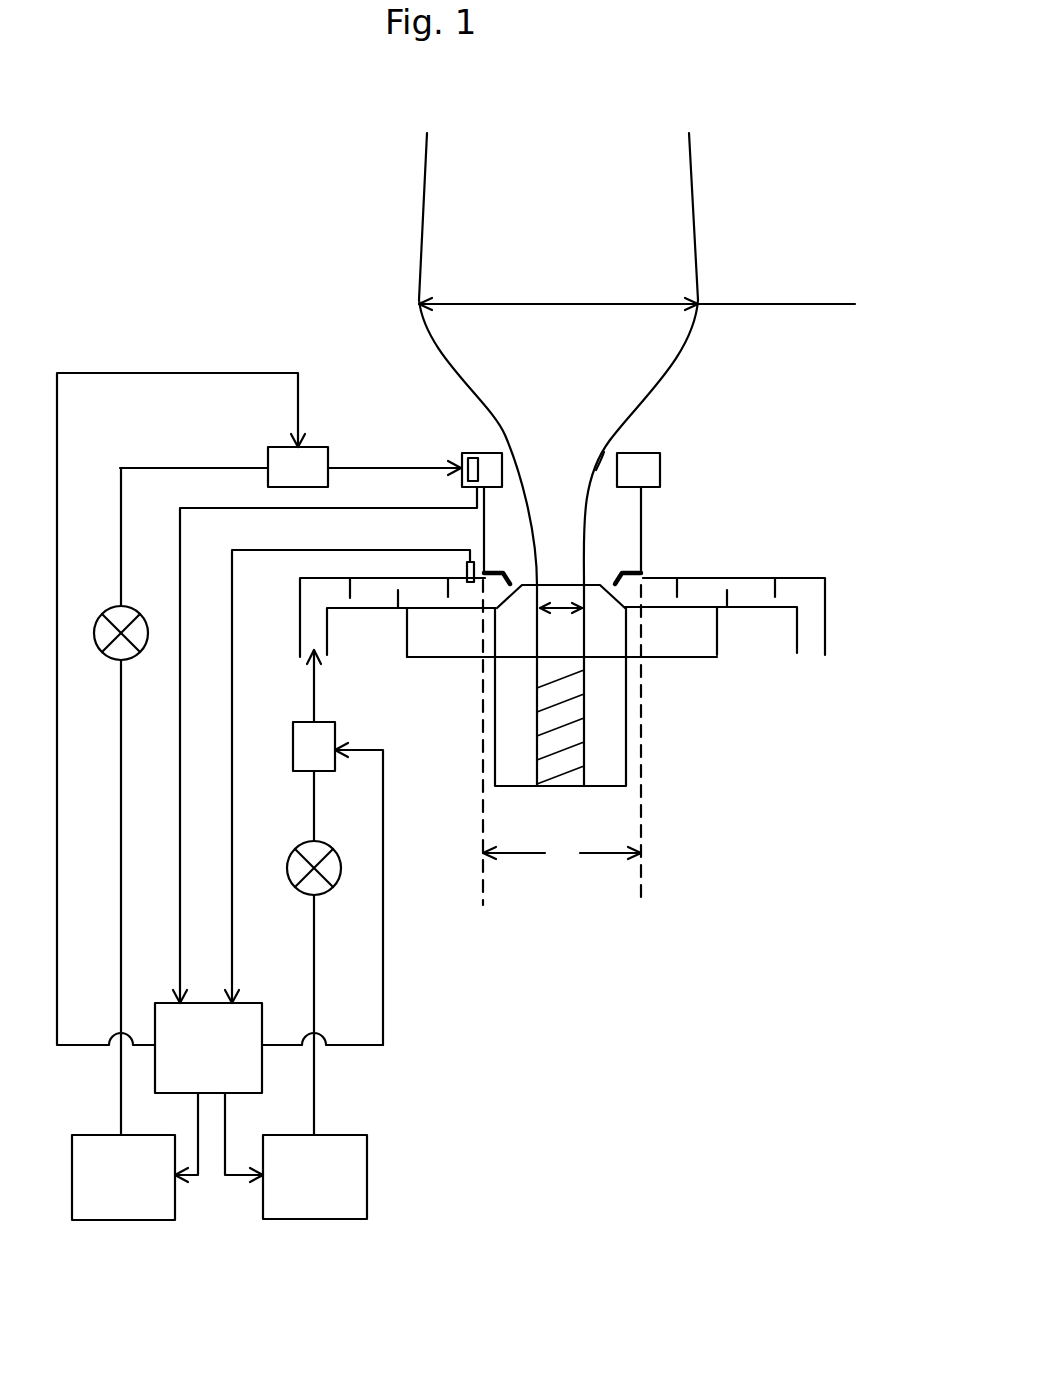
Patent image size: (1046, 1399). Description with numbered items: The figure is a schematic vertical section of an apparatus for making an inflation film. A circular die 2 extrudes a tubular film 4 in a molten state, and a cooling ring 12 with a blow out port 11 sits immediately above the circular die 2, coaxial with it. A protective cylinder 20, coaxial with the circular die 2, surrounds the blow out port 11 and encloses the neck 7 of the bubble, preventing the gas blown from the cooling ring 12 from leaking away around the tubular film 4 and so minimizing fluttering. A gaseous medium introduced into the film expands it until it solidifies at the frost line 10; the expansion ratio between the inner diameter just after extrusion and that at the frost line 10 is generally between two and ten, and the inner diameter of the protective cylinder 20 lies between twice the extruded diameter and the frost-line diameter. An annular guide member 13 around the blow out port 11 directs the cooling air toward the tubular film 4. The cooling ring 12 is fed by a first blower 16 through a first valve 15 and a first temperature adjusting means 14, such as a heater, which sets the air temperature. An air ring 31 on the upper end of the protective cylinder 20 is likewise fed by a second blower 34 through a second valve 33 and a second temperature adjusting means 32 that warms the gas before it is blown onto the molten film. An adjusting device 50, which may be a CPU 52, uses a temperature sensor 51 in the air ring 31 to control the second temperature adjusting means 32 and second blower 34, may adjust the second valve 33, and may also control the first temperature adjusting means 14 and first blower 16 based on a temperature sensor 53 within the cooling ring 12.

The circular die 2 is at (705, 658).
The tubular film 4 is at (712, 212).
The neck 7 is at (604, 458).
The frost line 10 is at (796, 303).
The blow out port 11 is at (634, 587).
The cooling ring 12 is at (830, 612).
The annular guide member 13 is at (613, 572).
The first temperature adjusting means 14 is at (340, 733).
The first valve 15 is at (320, 895).
The first blower 16 is at (368, 1172).
The protective cylinder 20 is at (645, 510).
The air ring 31 is at (648, 449).
The second temperature adjusting means 32 is at (330, 456).
The second valve 33 is at (128, 660).
The second blower 34 is at (125, 1222).
The adjusting device 50 is at (165, 1000).
The temperature sensor 51 is at (472, 455).
The CPU 52 is at (250, 1000).
The temperature sensor 53 is at (471, 584).